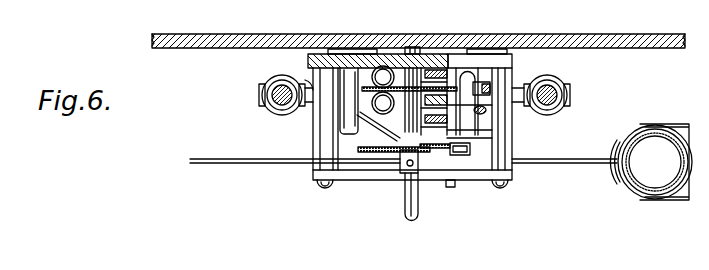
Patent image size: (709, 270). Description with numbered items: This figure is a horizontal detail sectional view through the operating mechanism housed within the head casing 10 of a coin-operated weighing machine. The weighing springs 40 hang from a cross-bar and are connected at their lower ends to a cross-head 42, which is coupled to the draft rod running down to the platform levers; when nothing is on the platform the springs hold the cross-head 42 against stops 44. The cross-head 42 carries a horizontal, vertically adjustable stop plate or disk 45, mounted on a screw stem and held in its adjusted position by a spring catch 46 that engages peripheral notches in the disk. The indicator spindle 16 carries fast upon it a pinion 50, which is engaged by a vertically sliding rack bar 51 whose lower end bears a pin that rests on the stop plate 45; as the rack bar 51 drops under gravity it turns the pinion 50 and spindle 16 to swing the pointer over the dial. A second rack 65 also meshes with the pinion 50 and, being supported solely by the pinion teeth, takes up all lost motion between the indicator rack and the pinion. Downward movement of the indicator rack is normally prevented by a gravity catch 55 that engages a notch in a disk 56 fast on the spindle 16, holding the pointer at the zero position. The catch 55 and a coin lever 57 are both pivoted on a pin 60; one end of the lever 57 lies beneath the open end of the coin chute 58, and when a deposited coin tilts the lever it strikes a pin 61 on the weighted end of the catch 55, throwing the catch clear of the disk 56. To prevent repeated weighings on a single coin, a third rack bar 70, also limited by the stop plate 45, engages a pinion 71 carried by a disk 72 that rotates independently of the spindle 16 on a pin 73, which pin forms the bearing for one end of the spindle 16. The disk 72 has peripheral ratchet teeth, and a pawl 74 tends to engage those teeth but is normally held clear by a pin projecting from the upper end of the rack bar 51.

The head casing 10 is at (443, 40).
The indicator spindle 16 is at (418, 216).
The weighing springs 40 is at (276, 82).
The cross-head 42 is at (312, 80).
The stops 44 is at (350, 130).
The stop plate or disk 45 is at (358, 118).
The spring catch 46 is at (378, 130).
The pinion 50 is at (455, 138).
The rack bar 51 is at (474, 113).
The gravity catch 55 is at (460, 156).
The disk 56 is at (385, 153).
The coin lever 57 is at (292, 165).
The coin chute 58 is at (651, 162).
The pin 60 is at (458, 182).
The pin 61 is at (411, 168).
The second rack 65 is at (448, 105).
The third rack bar 70 is at (440, 68).
The pinion 71 is at (404, 77).
The disk 72 is at (404, 103).
The pin 73 is at (414, 49).
The pawl 74 is at (490, 85).